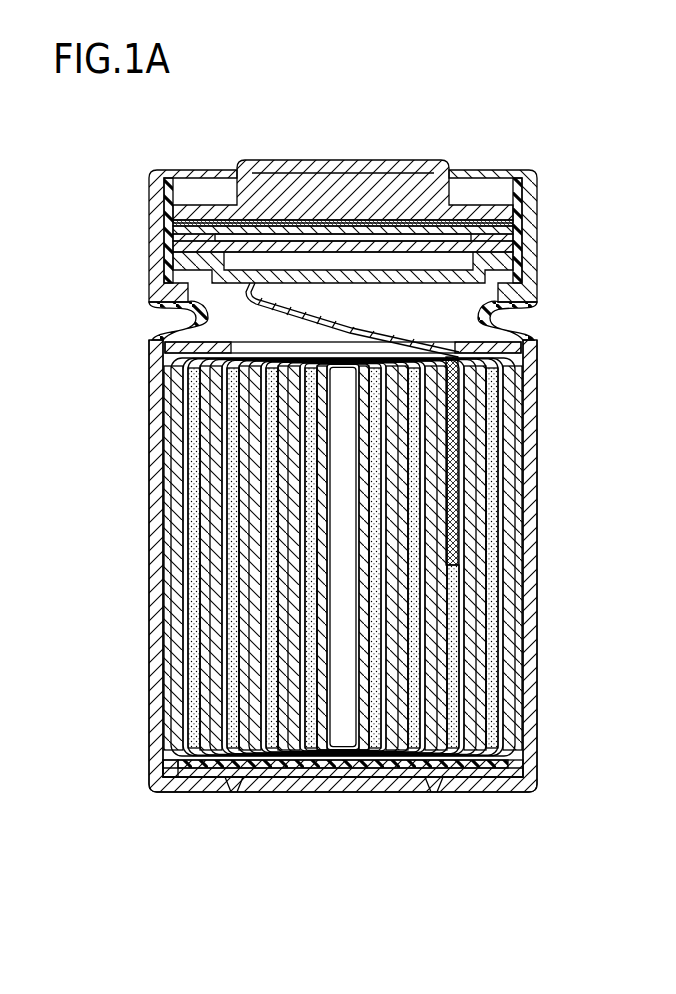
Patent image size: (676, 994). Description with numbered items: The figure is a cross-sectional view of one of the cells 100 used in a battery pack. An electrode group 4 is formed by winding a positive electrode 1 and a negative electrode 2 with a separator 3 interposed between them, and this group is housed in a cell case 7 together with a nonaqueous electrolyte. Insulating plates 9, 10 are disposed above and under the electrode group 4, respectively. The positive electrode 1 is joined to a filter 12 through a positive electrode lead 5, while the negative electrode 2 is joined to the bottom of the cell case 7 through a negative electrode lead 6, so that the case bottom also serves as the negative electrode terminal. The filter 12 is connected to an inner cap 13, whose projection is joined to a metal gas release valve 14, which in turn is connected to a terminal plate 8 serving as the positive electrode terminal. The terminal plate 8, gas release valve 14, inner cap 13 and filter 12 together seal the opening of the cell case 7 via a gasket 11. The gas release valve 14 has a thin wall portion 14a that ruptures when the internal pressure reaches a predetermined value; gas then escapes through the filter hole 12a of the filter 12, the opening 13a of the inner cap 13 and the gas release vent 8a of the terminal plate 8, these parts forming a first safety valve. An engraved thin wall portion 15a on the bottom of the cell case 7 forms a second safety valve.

The cell 100 is at (102, 137).
The positive electrode 1 is at (467, 472).
The negative electrode 2 is at (465, 448).
The separator 3 is at (465, 423).
The electrode group 4 is at (402, 557).
The positive electrode lead 5 is at (383, 334).
The negative electrode lead 6 is at (193, 780).
The cell case 7 is at (537, 577).
The terminal plate 8 is at (318, 160).
The gas release vent 8a is at (385, 225).
The insulating plate 9 is at (530, 319).
The insulating plate 10 is at (487, 791).
The gasket 11 is at (517, 273).
The filter 12 is at (517, 242).
The filter hole 12a is at (330, 283).
The inner cap 13 is at (517, 212).
The opening 13a is at (268, 240).
The gas release valve 14 is at (460, 197).
The thin wall portion 14a is at (455, 180).
The engraved thin wall portion 15a is at (237, 780).